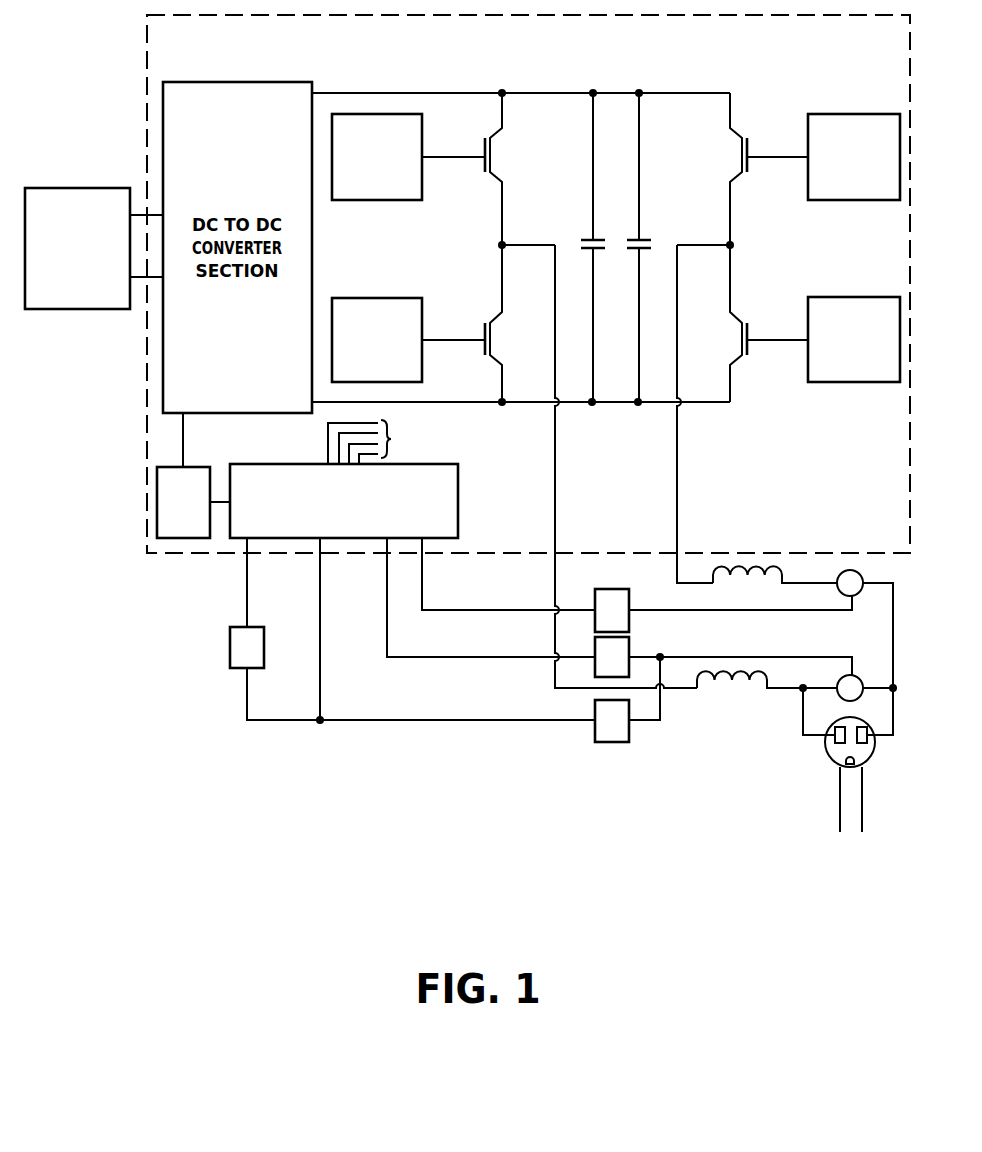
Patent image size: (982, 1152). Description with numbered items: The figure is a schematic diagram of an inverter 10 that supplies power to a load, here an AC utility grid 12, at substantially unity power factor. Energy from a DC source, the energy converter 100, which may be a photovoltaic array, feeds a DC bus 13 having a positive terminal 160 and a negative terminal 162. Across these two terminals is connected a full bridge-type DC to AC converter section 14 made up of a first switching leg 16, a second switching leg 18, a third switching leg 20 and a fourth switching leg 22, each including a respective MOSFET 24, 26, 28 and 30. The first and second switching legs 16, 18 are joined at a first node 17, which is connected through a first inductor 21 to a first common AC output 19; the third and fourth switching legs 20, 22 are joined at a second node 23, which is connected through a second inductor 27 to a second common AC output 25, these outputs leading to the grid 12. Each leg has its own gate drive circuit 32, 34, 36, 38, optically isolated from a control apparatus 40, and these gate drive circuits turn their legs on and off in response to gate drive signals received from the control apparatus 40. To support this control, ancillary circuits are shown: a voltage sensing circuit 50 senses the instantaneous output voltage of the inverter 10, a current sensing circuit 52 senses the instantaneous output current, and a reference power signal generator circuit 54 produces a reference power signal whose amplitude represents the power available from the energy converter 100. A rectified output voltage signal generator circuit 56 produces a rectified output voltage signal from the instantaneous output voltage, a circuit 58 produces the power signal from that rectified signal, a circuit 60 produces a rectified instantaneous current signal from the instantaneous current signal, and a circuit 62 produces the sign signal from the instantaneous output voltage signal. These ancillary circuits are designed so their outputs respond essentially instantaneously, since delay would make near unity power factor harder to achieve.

The inverter 10 is at (152, 42).
The AC utility grid 12 is at (851, 823).
The DC bus 13 is at (389, 90).
The DC to AC converter section 14 is at (642, 72).
The first switching leg 16 is at (493, 169).
The first node 17 is at (500, 245).
The second switching leg 18 is at (482, 323).
The first common AC output 19 is at (825, 747).
The third switching leg 20 is at (738, 169).
The first inductor 21 is at (734, 688).
The fourth switching leg 22 is at (749, 323).
The second node 23 is at (732, 245).
The MOSFET 24 is at (486, 137).
The second common AC output 25 is at (875, 747).
The MOSFET 26 is at (486, 322).
The second inductor 27 is at (752, 581).
The MOSFET 28 is at (744, 137).
The MOSFET 30 is at (744, 322).
The gate drive circuit 32 is at (365, 192).
The gate drive circuit 34 is at (365, 375).
The gate drive circuit 36 is at (842, 192).
The gate drive circuit 38 is at (842, 375).
The control apparatus 40 is at (332, 525).
The voltage sensing circuit 50 is at (861, 679).
The current sensing circuit 52 is at (859, 594).
The reference power signal generator circuit 54 is at (171, 525).
The rectified output voltage signal generator circuit 56 is at (601, 732).
The power signal circuit 58 is at (236, 658).
The rectified instantaneous current signal circuit 60 is at (601, 622).
The sign signal circuit 62 is at (601, 669).
The energy converter 100 is at (60, 284).
The positive terminal 160 is at (431, 92).
The negative terminal 162 is at (433, 402).